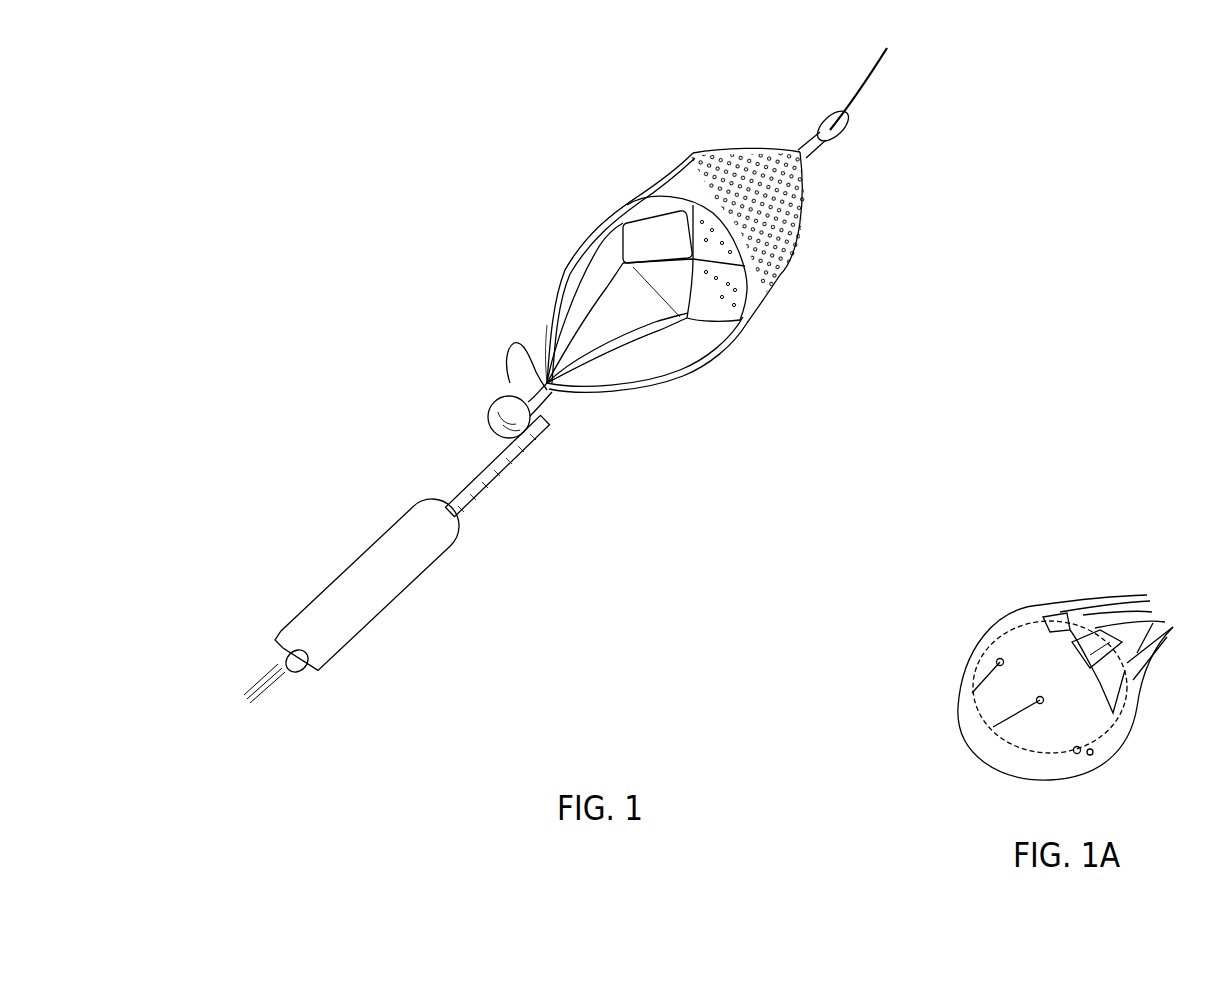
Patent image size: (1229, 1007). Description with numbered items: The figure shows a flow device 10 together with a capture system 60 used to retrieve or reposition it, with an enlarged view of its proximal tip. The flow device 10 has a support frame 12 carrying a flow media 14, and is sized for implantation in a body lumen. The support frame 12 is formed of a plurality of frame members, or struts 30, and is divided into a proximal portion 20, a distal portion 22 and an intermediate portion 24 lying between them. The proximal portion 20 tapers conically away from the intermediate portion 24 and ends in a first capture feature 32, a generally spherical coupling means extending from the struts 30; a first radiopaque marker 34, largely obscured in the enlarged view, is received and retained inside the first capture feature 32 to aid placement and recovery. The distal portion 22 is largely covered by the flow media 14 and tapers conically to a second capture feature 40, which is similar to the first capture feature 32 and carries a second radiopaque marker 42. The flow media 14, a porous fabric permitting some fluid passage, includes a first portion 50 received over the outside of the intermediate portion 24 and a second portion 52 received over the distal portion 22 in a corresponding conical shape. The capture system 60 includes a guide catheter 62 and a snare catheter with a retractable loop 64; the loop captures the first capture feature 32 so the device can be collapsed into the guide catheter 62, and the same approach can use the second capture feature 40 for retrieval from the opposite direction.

In FIG. 1, the flow device 10 is at (622, 128).
In FIG. 1, the support frame 12 is at (650, 390).
In FIG. 1, the flow media 14 is at (687, 153).
In FIG. 1, the proximal portion 20 is at (583, 393).
In FIG. 1, the distal portion 22 is at (797, 148).
In FIG. 1, the intermediate portion 24 is at (587, 232).
In FIG. 1, the struts 30 is at (545, 323).
In FIG. 1, the first capture feature 32 is at (488, 410).
In FIG. 1A, the first capture feature 32 is at (954, 579).
In FIG. 1A, the first radiopaque marker 34 is at (1097, 650).
In FIG. 1, the second capture feature 40 is at (840, 134).
In FIG. 1, the second radiopaque marker 42 is at (873, 79).
In FIG. 1, the first portion 50 is at (765, 287).
In FIG. 1, the second portion 52 is at (757, 148).
In FIG. 1, the capture system 60 is at (250, 556).
In FIG. 1, the guide catheter 62 is at (372, 603).
In FIG. 1, the retractable loop 64 is at (547, 400).